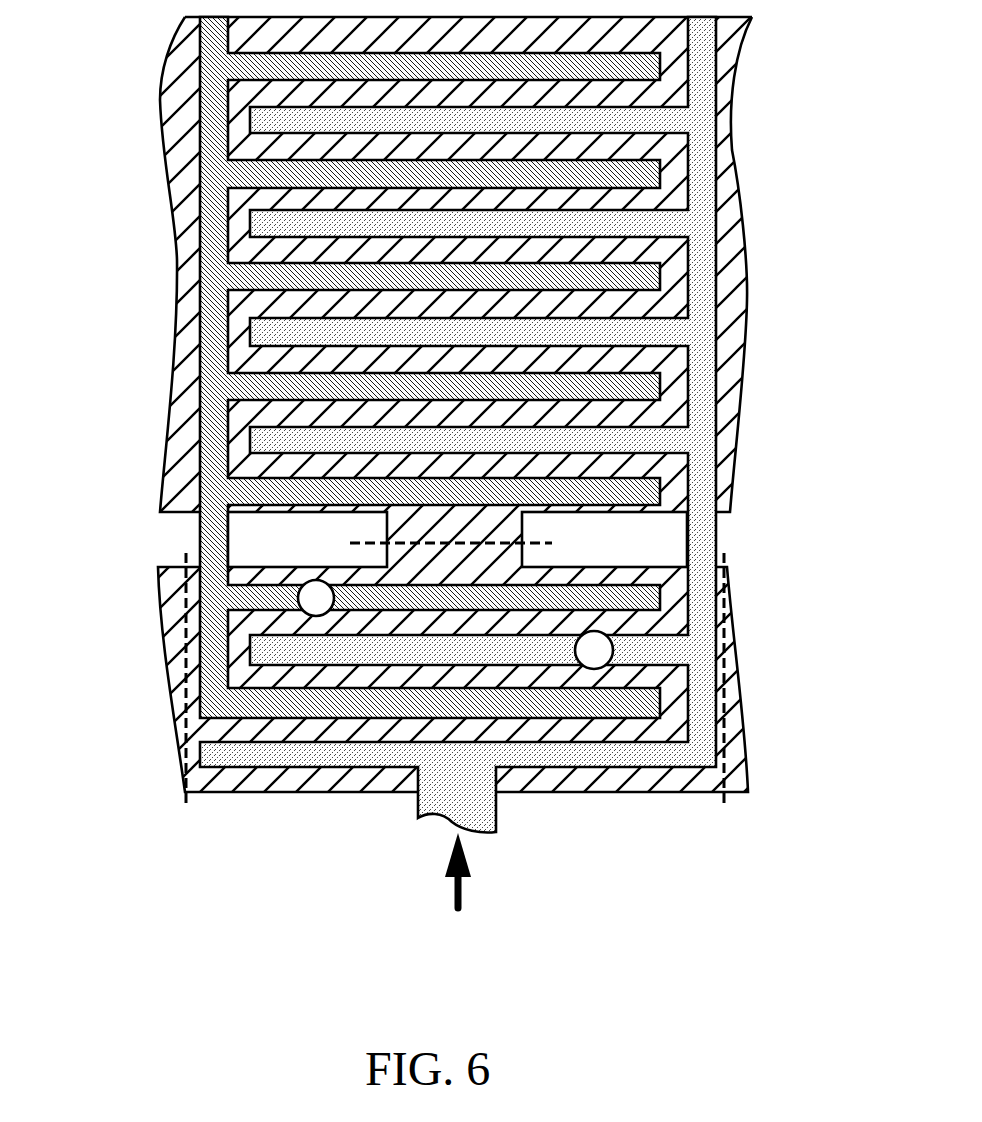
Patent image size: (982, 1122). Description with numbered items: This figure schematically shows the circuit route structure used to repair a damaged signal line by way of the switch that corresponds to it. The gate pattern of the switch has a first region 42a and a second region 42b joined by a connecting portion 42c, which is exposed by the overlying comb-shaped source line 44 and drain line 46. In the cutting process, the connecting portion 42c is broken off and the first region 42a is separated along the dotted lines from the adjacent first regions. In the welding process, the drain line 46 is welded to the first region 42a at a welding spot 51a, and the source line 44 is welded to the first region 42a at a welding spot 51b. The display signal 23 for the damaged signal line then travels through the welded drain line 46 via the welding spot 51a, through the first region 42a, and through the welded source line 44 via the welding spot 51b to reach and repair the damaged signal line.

The first region 42a is at (247, 793).
The second region 42b is at (160, 92).
The connecting portion 42c is at (515, 532).
The source line 44 is at (218, 377).
The drain line 46 is at (702, 255).
The welding spot 51a is at (598, 660).
The welding spot 51b is at (312, 587).
The display signal 23 is at (437, 877).